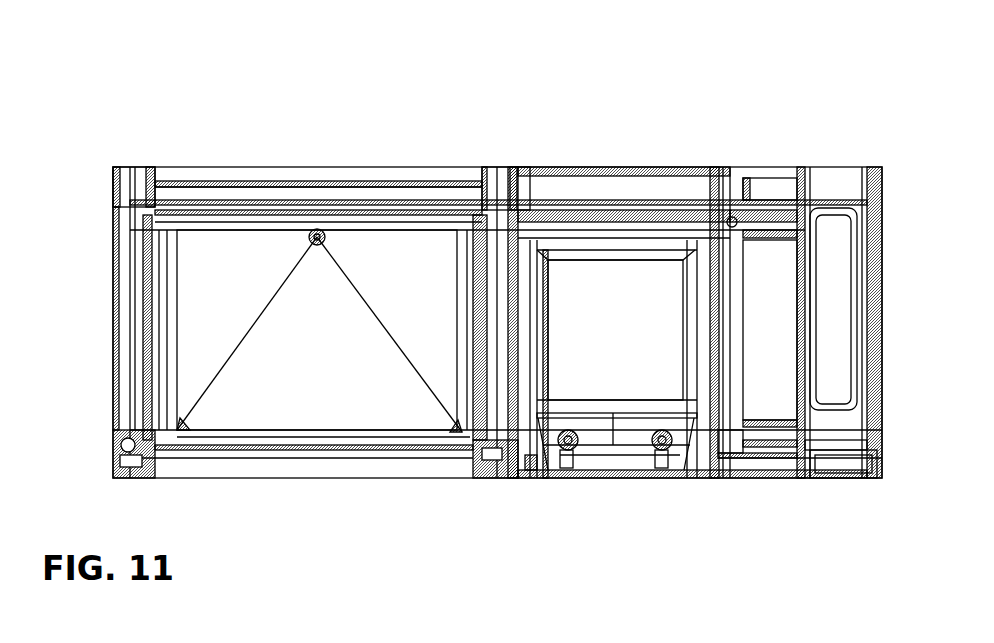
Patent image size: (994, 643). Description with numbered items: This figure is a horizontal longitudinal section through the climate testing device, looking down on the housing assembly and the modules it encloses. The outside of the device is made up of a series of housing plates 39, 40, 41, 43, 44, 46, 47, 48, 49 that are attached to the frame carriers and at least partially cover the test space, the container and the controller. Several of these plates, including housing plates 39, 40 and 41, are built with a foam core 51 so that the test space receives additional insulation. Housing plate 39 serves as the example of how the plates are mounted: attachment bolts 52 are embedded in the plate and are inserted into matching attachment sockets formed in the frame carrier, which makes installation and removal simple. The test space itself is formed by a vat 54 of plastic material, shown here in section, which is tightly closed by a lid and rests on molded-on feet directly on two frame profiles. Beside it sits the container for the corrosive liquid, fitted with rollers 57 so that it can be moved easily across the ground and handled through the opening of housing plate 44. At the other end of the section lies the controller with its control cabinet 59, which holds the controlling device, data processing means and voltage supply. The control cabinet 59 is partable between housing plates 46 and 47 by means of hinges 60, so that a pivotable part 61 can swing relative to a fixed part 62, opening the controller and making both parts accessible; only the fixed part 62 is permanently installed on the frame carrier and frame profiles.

The housing plate 39 is at (300, 483).
The housing plate 40 is at (112, 323).
The housing plate 41 is at (385, 157).
The housing plate 43 is at (627, 160).
The housing plate 44 is at (607, 484).
The housing plate 46 is at (763, 158).
The housing plate 47 is at (838, 158).
The housing plate 48 is at (886, 322).
The housing plate 49 is at (800, 484).
The foam core 51 is at (428, 177).
The attachment bolts 52 is at (137, 480).
The vat 54 is at (365, 408).
The rollers 57 is at (664, 452).
The control cabinet 59 is at (828, 420).
The hinges 60 is at (798, 158).
The pivotable part 61 is at (838, 273).
The fixed part 62 is at (768, 288).